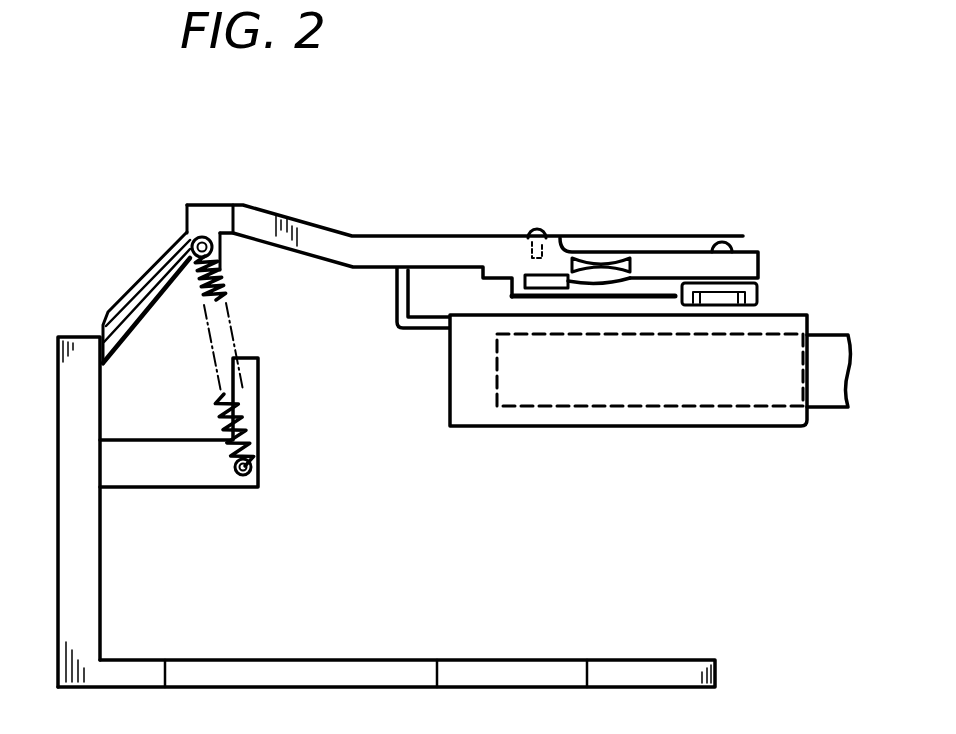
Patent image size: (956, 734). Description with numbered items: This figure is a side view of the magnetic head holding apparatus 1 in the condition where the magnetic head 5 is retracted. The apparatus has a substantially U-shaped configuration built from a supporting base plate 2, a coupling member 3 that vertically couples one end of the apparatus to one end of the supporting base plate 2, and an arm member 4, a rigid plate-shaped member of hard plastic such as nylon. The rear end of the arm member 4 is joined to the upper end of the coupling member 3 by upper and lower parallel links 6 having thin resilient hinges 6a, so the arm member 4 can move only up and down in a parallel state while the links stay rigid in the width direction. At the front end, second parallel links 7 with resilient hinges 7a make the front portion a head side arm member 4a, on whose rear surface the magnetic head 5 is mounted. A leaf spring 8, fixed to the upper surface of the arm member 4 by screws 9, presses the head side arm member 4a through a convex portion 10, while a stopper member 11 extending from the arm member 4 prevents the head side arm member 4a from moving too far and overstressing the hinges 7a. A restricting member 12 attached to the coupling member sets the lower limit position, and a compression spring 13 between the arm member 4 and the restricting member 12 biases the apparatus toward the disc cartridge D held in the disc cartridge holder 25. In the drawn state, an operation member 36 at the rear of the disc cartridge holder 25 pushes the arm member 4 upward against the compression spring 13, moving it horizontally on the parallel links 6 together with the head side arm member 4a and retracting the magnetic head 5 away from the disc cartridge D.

The magnetic head holding apparatus 1 is at (500, 258).
The supporting base plate 2 is at (494, 653).
The coupling member 3 is at (52, 524).
The arm member 4 is at (466, 251).
The head side arm member 4a is at (742, 268).
The magnetic head 5 is at (747, 306).
The parallel links 6 is at (150, 292).
The resilient hinges 6a is at (187, 232).
The second parallel links 7 is at (601, 237).
The resilient hinges 7a is at (578, 237).
The leaf spring 8 is at (687, 222).
The screws 9 is at (533, 228).
The convex portion 10 is at (731, 237).
The stopper member 11 is at (650, 298).
The restricting member 12 is at (259, 378).
The compression spring 13 is at (230, 289).
The disc cartridge holder 25 is at (785, 315).
The operation member 36 is at (397, 290).
The disc cartridge D is at (829, 335).